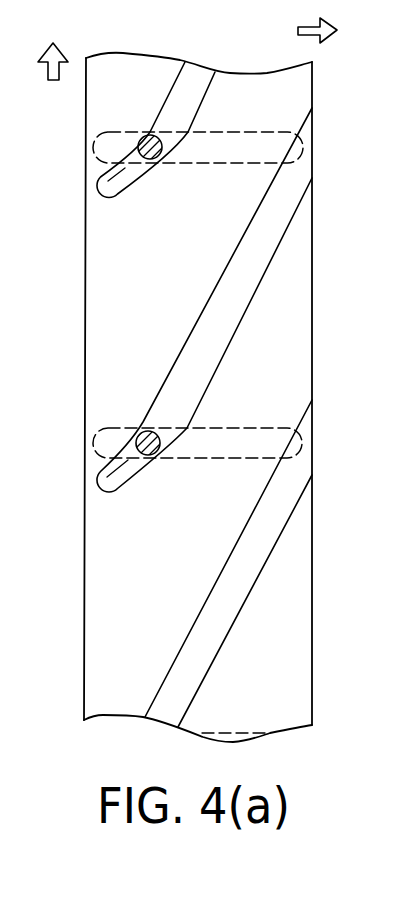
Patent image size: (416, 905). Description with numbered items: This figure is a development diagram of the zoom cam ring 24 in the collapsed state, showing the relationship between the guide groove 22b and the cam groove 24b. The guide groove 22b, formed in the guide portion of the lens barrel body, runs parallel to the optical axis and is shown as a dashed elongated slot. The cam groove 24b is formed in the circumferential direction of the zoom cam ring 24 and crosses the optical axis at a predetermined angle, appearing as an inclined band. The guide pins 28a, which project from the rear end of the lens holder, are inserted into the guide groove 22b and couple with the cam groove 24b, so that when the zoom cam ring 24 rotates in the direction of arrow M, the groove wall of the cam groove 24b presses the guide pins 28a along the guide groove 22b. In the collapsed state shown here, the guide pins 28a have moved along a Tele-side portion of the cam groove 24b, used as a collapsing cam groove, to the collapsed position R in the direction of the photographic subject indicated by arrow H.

The zoom cam ring 24 is at (295, 632).
The cam groove 24b is at (235, 292).
The guide groove 22b is at (248, 150).
The guide pins 28a is at (158, 160).
The collapsed position R is at (138, 413).
The arrow M (rotation direction of zoom cam) M is at (53, 45).
The arrow H (photographic subject direction) H is at (331, 31).